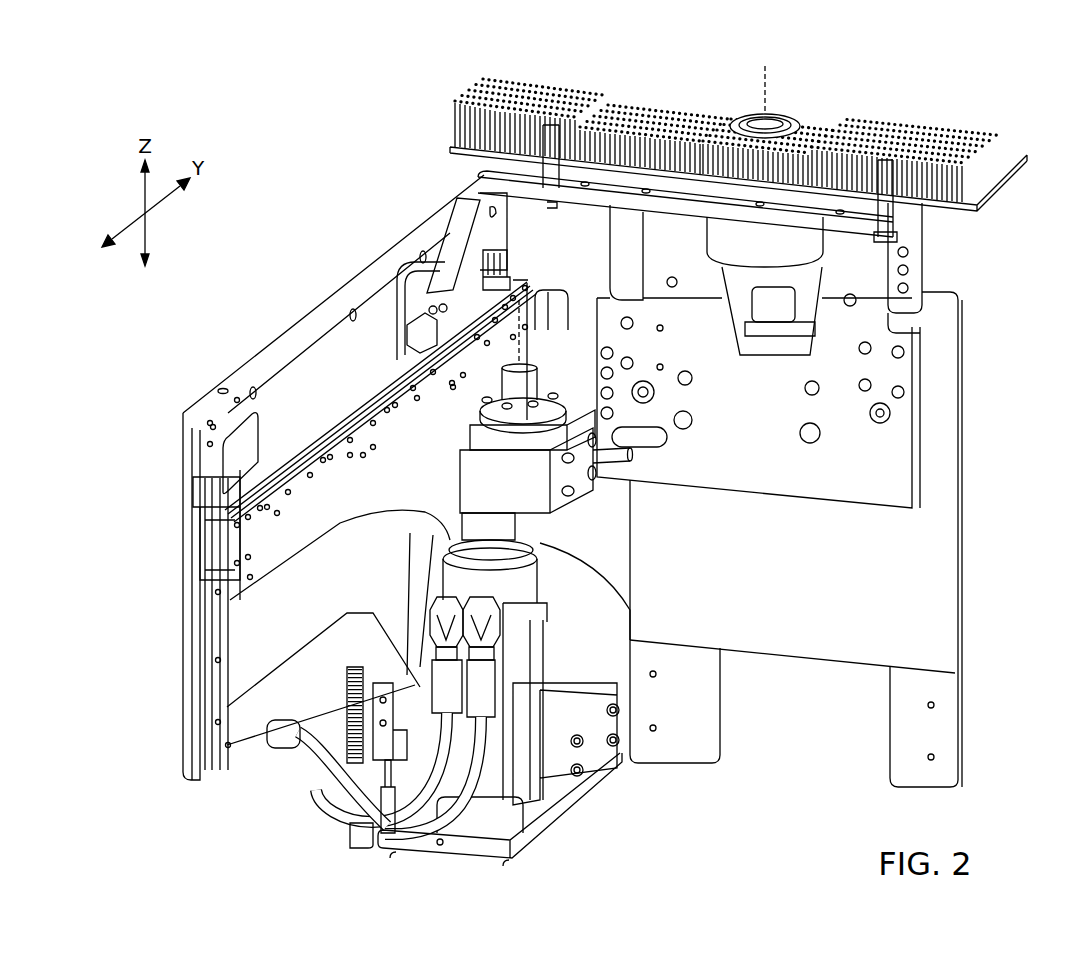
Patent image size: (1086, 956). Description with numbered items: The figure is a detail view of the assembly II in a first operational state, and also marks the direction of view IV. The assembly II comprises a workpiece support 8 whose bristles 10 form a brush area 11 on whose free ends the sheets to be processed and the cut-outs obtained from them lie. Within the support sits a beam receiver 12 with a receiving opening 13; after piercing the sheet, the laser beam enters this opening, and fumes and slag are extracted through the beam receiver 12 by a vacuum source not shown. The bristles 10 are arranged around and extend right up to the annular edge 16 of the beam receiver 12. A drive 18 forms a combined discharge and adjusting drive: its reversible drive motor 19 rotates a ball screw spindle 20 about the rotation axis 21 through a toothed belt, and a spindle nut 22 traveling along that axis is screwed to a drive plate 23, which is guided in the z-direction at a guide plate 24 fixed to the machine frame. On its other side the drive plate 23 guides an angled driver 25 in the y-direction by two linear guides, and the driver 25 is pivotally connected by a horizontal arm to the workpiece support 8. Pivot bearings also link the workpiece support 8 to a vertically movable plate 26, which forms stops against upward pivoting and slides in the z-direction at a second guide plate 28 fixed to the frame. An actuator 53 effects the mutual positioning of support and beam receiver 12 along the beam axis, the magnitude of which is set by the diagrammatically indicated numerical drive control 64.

The workpiece support 8 is at (478, 88).
The bristles 10 is at (1025, 150).
The brush area 11 is at (964, 122).
The beam receiver 12 is at (780, 108).
The receiving opening 13 is at (760, 114).
The annular edge 16 is at (726, 112).
The drive 18 is at (605, 800).
The drive motor 19 is at (513, 773).
The ball screw spindle 20 is at (535, 540).
The rotation axis 21 is at (458, 296).
The spindle nut 22 is at (475, 465).
The drive plate 23 is at (243, 545).
The guide plate 24 is at (190, 688).
The angled driver 25 is at (452, 227).
The vertically movable plate 26 is at (898, 455).
The second guide plate 28 is at (935, 637).
The actuator 53 is at (630, 784).
The numerical drive control 64 is at (372, 70).
The assembly II is at (983, 561).
The view direction IV is at (982, 318).